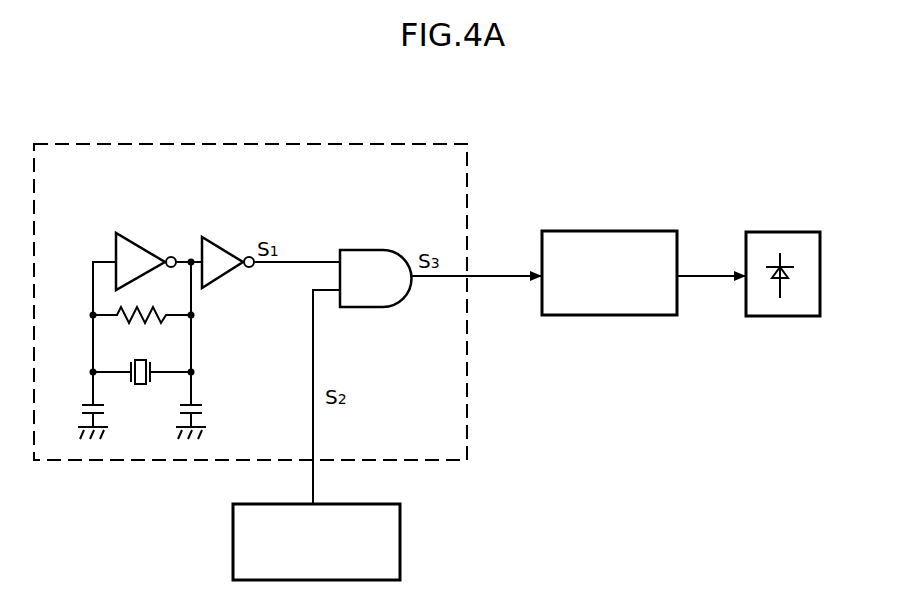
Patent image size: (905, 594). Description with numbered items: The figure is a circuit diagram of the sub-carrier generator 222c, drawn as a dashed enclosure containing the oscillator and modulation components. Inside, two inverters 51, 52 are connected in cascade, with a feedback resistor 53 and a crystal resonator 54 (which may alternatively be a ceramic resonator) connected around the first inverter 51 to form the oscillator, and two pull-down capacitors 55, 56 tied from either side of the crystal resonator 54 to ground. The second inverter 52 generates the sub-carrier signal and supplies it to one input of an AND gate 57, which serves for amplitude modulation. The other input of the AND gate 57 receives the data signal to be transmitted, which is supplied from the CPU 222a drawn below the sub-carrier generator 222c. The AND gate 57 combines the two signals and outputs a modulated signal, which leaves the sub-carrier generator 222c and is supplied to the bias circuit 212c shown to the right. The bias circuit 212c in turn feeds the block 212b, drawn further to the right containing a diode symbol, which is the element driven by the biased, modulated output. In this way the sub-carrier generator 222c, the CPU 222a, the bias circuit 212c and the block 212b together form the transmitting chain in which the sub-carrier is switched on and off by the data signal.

The sub-carrier generator 222c is at (218, 144).
The inverter 51 is at (131, 250).
The inverter 52 is at (227, 250).
The feedback resistor 53 is at (159, 312).
The crystal resonator 54 is at (151, 364).
The pull-down capacitor 55 is at (82, 408).
The pull-down capacitor 56 is at (203, 408).
The AND gate 57 is at (357, 256).
The bias circuit 212c is at (605, 231).
The light emitting diode 212b is at (775, 232).
The CPU 222a is at (400, 520).